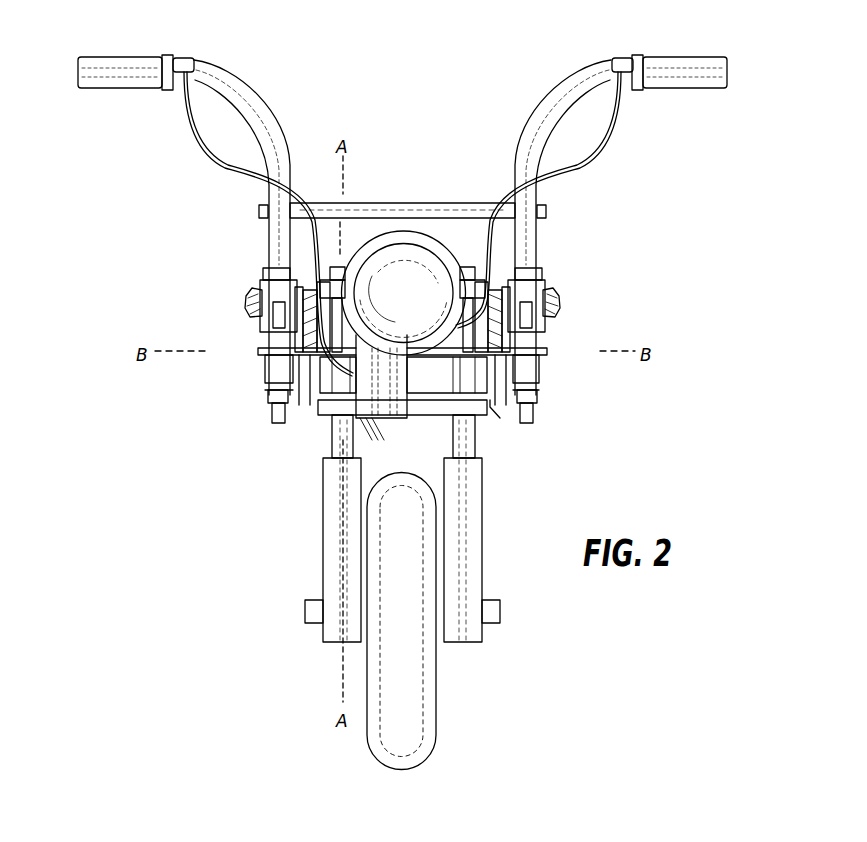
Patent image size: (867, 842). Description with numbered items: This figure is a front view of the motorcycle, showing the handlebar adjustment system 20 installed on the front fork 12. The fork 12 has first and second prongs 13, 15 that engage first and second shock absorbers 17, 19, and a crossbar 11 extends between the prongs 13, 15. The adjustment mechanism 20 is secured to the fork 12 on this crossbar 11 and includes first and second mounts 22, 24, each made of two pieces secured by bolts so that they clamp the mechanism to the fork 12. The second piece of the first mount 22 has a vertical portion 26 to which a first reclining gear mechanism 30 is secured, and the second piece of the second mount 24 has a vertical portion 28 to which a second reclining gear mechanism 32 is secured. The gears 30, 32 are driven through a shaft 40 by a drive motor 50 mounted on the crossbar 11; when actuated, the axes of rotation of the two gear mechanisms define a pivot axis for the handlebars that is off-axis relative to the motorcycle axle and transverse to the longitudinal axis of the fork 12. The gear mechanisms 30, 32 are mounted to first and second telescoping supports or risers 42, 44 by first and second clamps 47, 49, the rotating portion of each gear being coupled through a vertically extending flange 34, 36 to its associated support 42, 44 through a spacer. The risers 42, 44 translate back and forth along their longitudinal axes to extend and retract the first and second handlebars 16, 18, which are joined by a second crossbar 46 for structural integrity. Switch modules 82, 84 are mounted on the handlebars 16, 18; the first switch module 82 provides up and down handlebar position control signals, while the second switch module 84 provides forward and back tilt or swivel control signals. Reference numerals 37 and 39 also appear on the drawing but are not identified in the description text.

The crossbar 11 is at (420, 413).
The fork 12 is at (301, 528).
The first prong 13 is at (334, 445).
The second prong 15 is at (478, 440).
The first handlebar 16 is at (252, 93).
The first shock absorber 17 is at (335, 486).
The second handlebar 18 is at (540, 113).
The second shock absorber 19 is at (462, 492).
The handlebar adjustment system 20 is at (567, 300).
The first mount 22 is at (335, 405).
The second mount 24 is at (442, 398).
The vertical portion 26 is at (300, 393).
The vertical portion 28 is at (490, 403).
The first reclining gear mechanism 30 is at (302, 388).
The second reclining gear mechanism 32 is at (537, 405).
The vertically extending flange 34 is at (290, 362).
The vertically extending flange 36 is at (537, 383).
The left mounting plate 37 is at (290, 346).
The right mounting plate 39 is at (517, 338).
The shaft 40 is at (537, 353).
The first telescoping support 42 is at (292, 328).
The second telescoping support 44 is at (540, 263).
The second crossbar 46 is at (411, 201).
The first clamp 47 is at (258, 293).
The second clamp 49 is at (549, 283).
The drive motor 50 is at (370, 422).
The first switch module 82 is at (618, 58).
The second switch module 84 is at (184, 58).